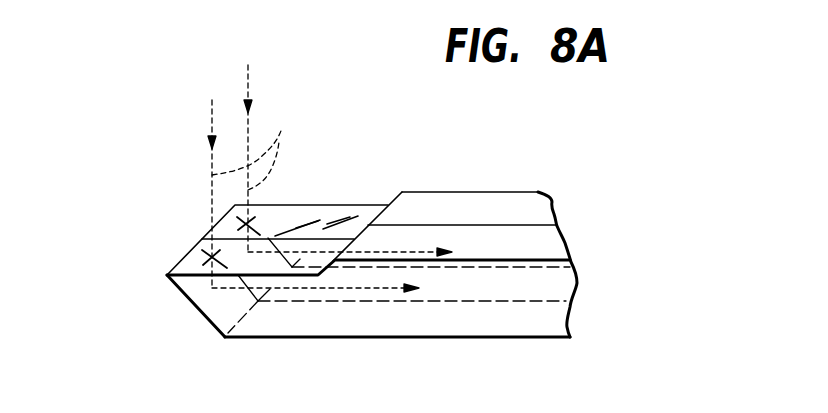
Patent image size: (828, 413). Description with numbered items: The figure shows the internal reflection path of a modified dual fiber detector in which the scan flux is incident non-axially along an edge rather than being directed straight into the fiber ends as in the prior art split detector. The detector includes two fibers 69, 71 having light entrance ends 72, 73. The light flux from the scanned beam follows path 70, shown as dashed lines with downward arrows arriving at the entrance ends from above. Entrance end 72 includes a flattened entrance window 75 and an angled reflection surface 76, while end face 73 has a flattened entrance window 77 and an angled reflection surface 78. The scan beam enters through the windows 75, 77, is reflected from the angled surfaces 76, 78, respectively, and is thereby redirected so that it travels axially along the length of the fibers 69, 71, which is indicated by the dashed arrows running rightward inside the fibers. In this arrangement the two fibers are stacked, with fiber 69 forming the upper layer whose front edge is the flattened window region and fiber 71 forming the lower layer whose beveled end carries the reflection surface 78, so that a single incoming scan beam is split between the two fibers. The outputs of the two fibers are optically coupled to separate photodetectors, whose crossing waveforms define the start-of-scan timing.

The fiber 69 is at (552, 253).
The path 70 is at (251, 176).
The fiber 71 is at (525, 208).
The light entrance end 72 is at (194, 186).
The light entrance end 73 is at (135, 294).
The flattened entrance window 75 is at (272, 217).
The angled reflection surface 76 is at (205, 242).
The flattened entrance window 77 is at (190, 262).
The angled reflection surface 78 is at (200, 308).